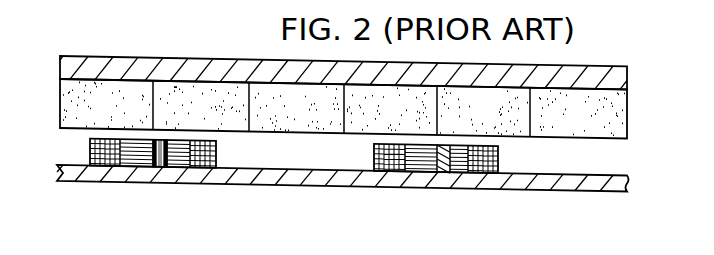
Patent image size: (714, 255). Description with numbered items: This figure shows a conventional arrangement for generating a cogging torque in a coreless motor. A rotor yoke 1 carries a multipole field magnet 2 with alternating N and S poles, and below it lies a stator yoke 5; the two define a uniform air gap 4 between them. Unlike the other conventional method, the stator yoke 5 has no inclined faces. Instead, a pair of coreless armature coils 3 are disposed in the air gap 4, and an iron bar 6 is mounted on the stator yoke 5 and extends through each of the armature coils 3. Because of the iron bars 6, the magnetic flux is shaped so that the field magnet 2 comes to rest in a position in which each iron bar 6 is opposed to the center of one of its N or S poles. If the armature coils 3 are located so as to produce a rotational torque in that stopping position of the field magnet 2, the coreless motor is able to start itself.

The rotor yoke 1 is at (620, 82).
The field magnet 2 is at (618, 117).
The coreless armature coils 3 is at (90, 152).
The uniform air gap 4 is at (277, 156).
The stator yoke 5 is at (344, 178).
The iron bar 6 is at (162, 167).